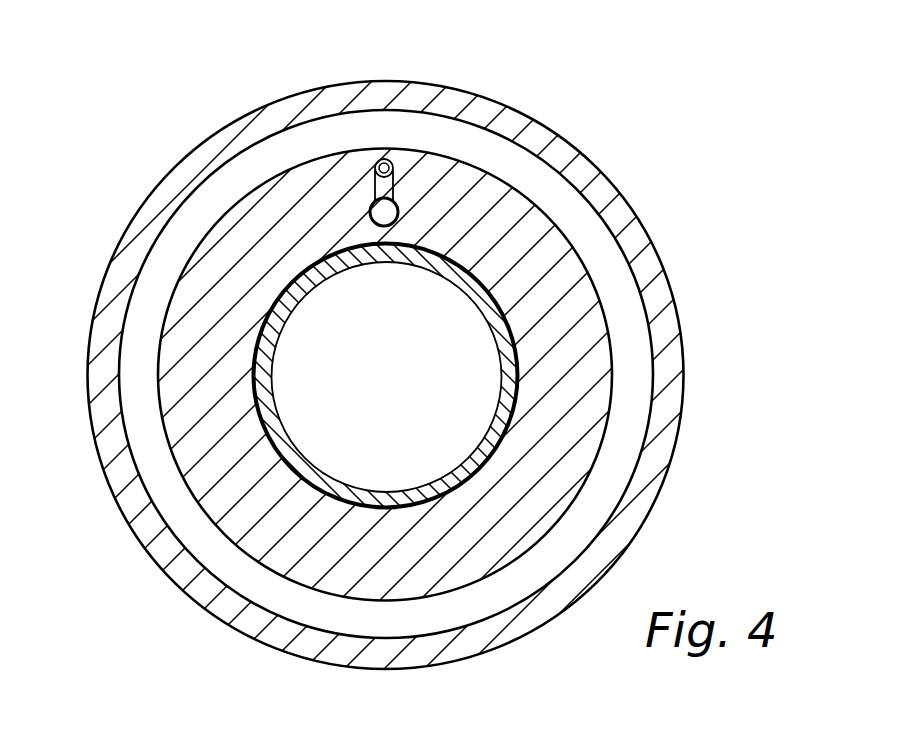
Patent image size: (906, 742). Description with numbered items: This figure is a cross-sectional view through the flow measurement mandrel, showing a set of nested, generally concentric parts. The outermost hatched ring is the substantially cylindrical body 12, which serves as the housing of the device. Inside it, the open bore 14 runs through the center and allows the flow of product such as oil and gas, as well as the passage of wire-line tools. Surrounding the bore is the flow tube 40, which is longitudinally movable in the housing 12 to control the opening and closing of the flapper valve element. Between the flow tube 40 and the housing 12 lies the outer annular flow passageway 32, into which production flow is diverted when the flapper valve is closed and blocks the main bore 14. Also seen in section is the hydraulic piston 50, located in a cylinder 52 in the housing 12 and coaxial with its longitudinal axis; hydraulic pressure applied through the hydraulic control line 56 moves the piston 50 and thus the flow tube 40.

The body 12 is at (580, 300).
The open bore 14 is at (463, 403).
The outer annular flow passageway 32 is at (517, 172).
The flow tube 40 is at (280, 300).
The hydraulic piston 50 is at (391, 209).
The cylinder 52 is at (372, 206).
The hydraulic control line 56 is at (377, 162).